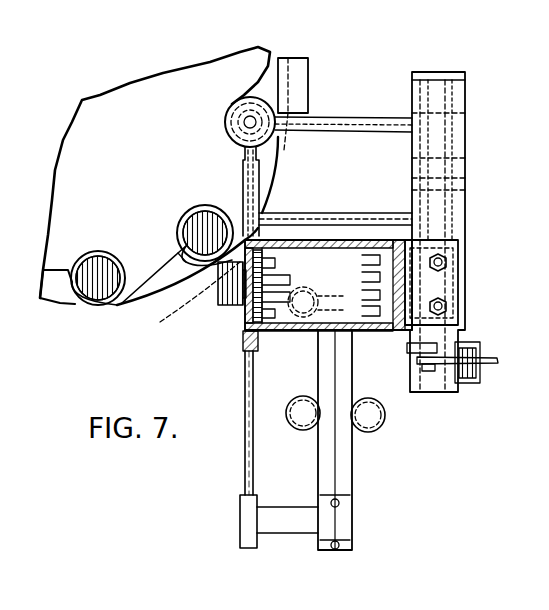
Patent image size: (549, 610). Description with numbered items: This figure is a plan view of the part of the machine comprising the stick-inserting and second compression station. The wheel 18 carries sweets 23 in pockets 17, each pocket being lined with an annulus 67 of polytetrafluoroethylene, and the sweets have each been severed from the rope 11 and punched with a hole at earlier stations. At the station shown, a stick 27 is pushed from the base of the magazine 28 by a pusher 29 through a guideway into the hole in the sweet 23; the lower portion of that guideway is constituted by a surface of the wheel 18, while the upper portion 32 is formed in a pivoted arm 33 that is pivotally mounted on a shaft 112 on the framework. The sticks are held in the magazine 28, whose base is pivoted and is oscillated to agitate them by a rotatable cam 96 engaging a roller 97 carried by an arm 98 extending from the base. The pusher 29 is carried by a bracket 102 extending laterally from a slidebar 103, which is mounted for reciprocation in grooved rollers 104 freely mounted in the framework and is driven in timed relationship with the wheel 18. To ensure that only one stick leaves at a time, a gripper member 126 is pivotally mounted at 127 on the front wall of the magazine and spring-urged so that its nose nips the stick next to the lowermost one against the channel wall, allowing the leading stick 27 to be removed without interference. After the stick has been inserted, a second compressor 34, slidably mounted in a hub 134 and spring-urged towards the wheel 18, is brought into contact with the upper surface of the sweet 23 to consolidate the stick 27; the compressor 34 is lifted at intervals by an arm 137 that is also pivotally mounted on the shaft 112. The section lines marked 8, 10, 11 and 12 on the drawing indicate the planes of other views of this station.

The section line 8- 8 is at (303, 286).
The section line 10- 10 is at (148, 228).
The rope 11 is at (168, 178).
The section line 12- 12 is at (188, 110).
The pockets 17 is at (206, 226).
The wheel 18 is at (241, 64).
The sweet 23 is at (98, 290).
The stick 27 is at (253, 272).
The magazine 28 is at (326, 270).
The pusher 29 is at (246, 441).
The upper portion of the guideway 32 is at (256, 176).
The pivoted arm 33 is at (379, 222).
The second compressor 34 is at (234, 108).
The annulus 67 is at (107, 262).
The rotatable cam 96 is at (488, 357).
The roller 97 is at (428, 377).
The arm 98 is at (413, 353).
The bracket 102 is at (290, 522).
The slidebar 103 is at (343, 478).
The grooved rollers 104 is at (305, 418).
The shaft 112 is at (438, 97).
The gripper member 126 is at (238, 300).
The pivot of the gripper member 127 is at (189, 298).
The hub 134 is at (254, 108).
The arm 137 is at (346, 117).